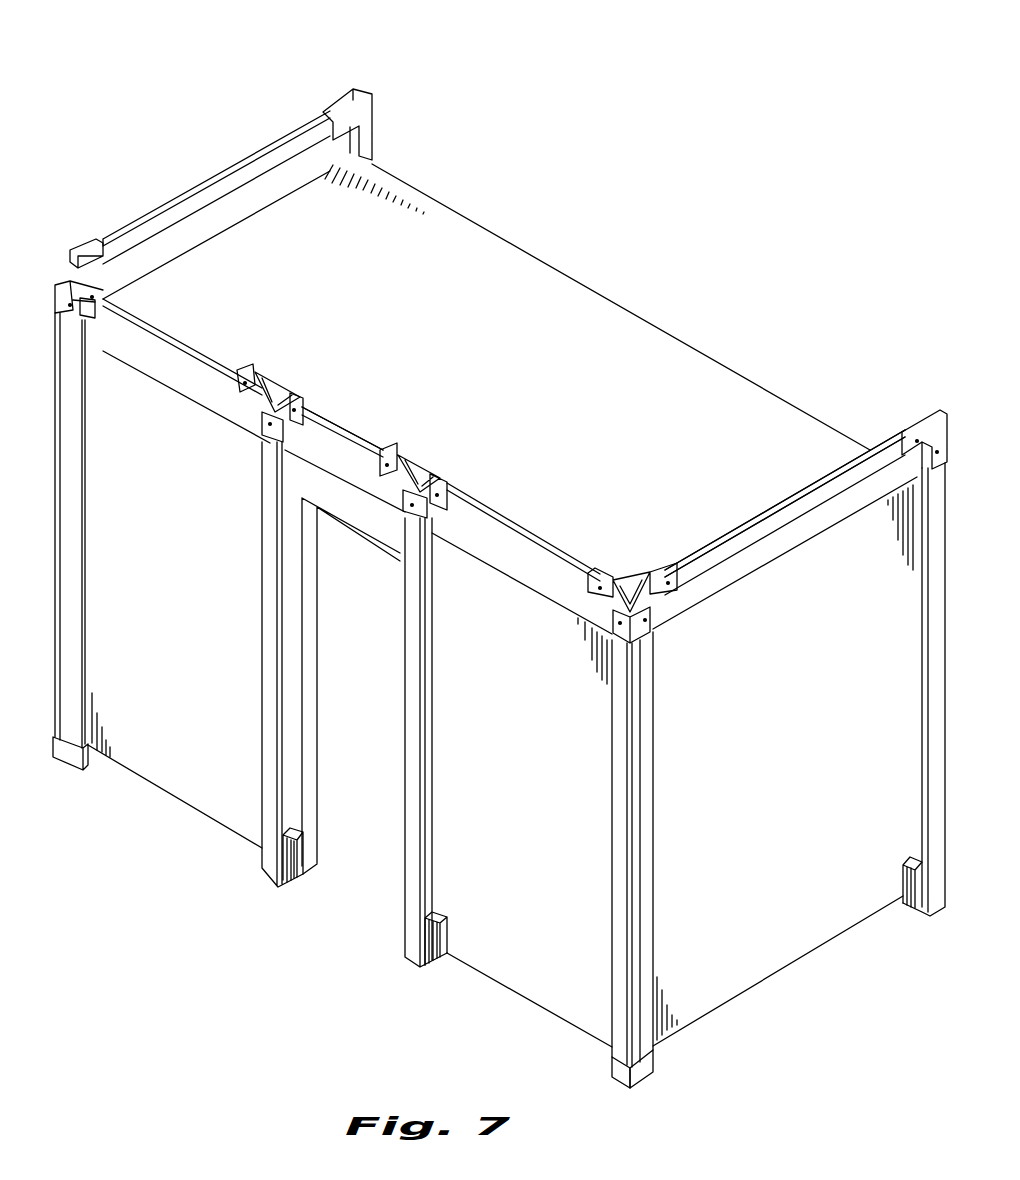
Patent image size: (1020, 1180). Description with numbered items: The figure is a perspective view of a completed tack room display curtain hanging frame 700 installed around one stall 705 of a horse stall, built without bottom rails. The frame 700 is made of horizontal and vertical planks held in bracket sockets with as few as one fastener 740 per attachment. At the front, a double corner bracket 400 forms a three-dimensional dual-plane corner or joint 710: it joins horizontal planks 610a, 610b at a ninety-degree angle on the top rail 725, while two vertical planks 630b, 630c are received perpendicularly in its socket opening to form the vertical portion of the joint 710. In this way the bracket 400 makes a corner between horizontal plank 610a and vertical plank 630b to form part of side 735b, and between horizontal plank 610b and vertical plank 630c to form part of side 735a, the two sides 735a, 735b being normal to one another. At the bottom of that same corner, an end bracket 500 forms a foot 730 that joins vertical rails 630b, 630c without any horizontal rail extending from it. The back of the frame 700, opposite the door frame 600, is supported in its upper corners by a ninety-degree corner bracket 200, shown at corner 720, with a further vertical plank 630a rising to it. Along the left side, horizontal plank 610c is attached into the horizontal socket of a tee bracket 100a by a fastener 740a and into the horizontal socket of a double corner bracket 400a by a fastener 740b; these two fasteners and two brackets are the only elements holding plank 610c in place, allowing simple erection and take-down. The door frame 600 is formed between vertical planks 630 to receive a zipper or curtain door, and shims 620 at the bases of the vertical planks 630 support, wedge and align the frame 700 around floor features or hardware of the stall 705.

The display curtain hanging frame 700 is at (531, 178).
The corner 720 is at (343, 90).
The dual-plane corner / joint 710 is at (62, 262).
The double corner bracket 400a is at (88, 243).
The top rail 725 is at (262, 165).
The fastener 740b is at (93, 293).
The horizontal plank 610c is at (170, 333).
The fastener 740a is at (245, 380).
The fastener 740 is at (294, 407).
The door frame 600 is at (350, 418).
The stall 705 is at (525, 370).
The tee bracket 100a is at (240, 400).
The horizontal plank 610b is at (524, 545).
The horizontal plank 610a is at (765, 523).
The corner bracket 200 is at (888, 432).
The double corner bracket 400 is at (662, 598).
The vertical plank 630a is at (937, 646).
The side 735a is at (545, 754).
The side 735b is at (795, 742).
The vertical plank 630c is at (622, 828).
The vertical plank 630b is at (654, 868).
The vertical plank 630 is at (403, 893).
The shim 620 is at (433, 955).
The end bracket 500 is at (616, 1075).
The foot 730 is at (650, 1090).